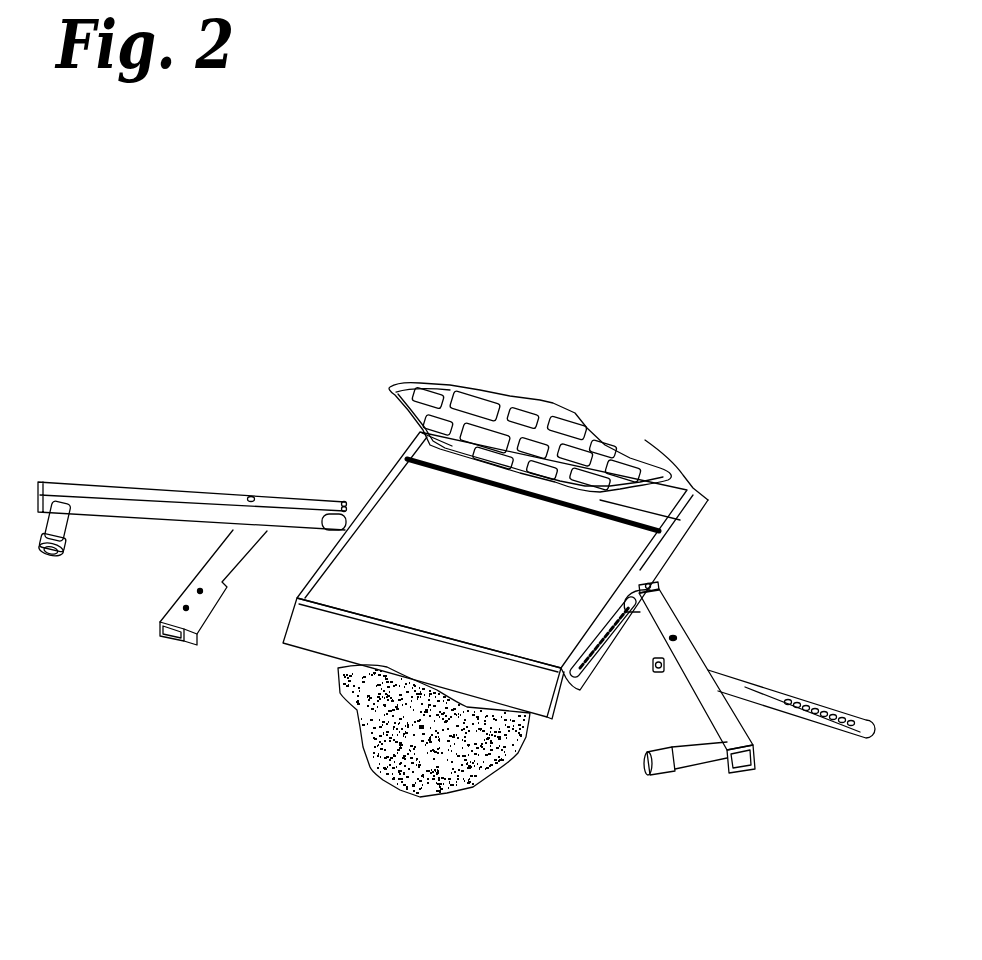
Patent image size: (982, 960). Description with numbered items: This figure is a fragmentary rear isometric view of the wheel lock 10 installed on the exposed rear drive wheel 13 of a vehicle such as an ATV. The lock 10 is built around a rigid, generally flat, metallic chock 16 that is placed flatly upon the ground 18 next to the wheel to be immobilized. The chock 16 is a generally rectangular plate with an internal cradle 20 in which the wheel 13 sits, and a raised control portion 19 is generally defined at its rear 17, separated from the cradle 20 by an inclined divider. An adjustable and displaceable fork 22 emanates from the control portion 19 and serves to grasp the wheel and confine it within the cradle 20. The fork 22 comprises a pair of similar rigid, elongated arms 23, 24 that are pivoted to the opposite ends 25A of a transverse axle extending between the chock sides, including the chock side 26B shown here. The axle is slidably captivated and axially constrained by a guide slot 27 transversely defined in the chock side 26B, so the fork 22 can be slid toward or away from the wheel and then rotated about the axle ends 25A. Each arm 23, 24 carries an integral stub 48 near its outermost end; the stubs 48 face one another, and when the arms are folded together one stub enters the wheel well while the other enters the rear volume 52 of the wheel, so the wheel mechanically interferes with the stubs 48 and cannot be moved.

The wheel lock 10 is at (687, 588).
The rear drive wheel 13 is at (475, 407).
The chock 16 is at (272, 652).
The rear 17 is at (334, 653).
The ground 18 is at (390, 767).
The control portion 19 is at (657, 500).
The cradle 20 is at (363, 573).
The fork 22 is at (660, 680).
The fork arm 23 is at (168, 483).
The fork arm 24 is at (683, 657).
The axle end 25A is at (333, 515).
The chock side 26B is at (670, 543).
The guide slot 27 is at (590, 670).
The stub 48 is at (697, 757).
The rear volume 52 is at (647, 440).